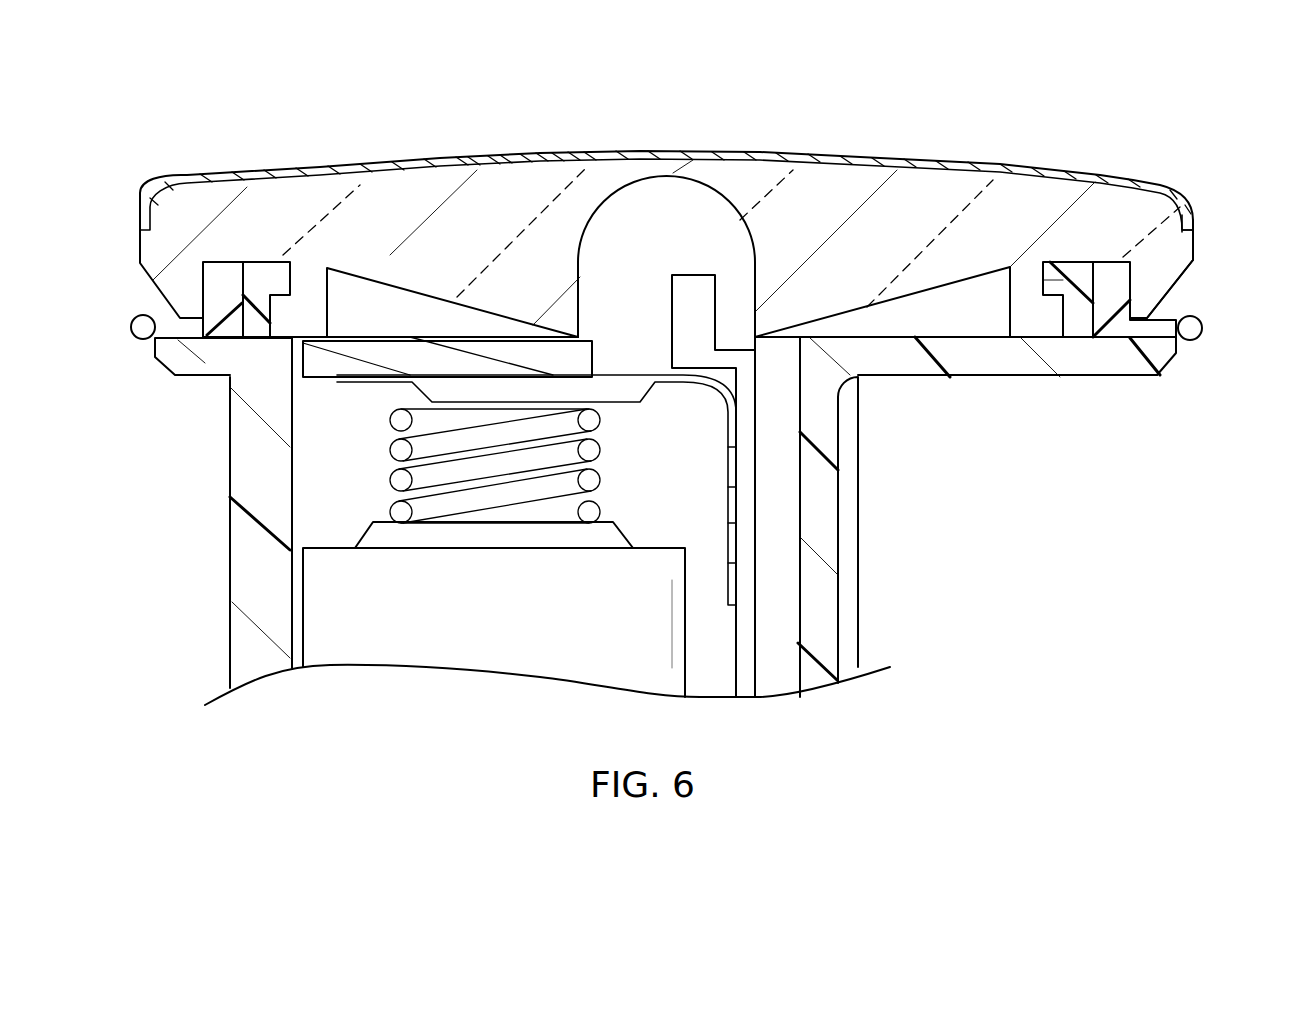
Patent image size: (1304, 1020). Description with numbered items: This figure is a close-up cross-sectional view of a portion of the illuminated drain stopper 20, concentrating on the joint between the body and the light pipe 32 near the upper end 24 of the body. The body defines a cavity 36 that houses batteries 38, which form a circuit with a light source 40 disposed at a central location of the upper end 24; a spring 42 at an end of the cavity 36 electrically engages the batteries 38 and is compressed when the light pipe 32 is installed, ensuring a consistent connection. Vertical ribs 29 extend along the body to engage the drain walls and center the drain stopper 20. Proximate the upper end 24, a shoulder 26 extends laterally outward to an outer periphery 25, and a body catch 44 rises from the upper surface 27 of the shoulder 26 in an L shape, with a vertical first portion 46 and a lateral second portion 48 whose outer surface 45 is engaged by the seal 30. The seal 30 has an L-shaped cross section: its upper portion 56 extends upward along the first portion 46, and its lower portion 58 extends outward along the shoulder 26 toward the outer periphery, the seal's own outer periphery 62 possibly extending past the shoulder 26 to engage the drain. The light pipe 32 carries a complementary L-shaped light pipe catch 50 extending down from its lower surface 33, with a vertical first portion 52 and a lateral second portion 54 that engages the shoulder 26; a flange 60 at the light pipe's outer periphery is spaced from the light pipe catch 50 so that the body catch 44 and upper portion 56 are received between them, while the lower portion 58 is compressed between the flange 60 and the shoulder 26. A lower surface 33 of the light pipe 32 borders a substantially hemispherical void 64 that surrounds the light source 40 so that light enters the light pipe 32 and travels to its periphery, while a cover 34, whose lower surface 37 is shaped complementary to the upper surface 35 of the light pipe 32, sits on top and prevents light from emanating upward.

The drain stopper 20 is at (163, 118).
The upper end 24 is at (58, 217).
The outer periphery of the shoulder 25 is at (1182, 357).
The shoulder 26 is at (1010, 377).
The upper surface of the shoulder 27 is at (940, 337).
The ribs 29 is at (230, 585).
The seal 30 is at (1117, 330).
The light pipe 32 is at (823, 190).
The lower surface of the light pipe 33 is at (405, 303).
The cover 34 is at (670, 150).
The upper surface of the light pipe 35 is at (487, 157).
The cavity 36 is at (330, 420).
The lower surface of the cover 37 is at (528, 173).
The batteries 38 is at (333, 570).
The light source 40 is at (690, 343).
The spring 42 is at (417, 477).
The body catch 44 is at (260, 277).
The outer surface of the body catch 45 is at (1147, 257).
The first portion of the body catch 46 is at (1046, 316).
The second portion of the body catch 48 is at (1057, 287).
The light pipe catch 50 is at (288, 318).
The first portion of the light pipe catch 52 is at (1030, 280).
The second portion of the light pipe catch 54 is at (1078, 318).
The upper portion of the seal 56 is at (227, 291).
The lower portion of the seal 58 is at (187, 330).
The flange 60 is at (1167, 268).
The outer periphery of the seal 62 is at (1208, 323).
The void 64 is at (657, 253).